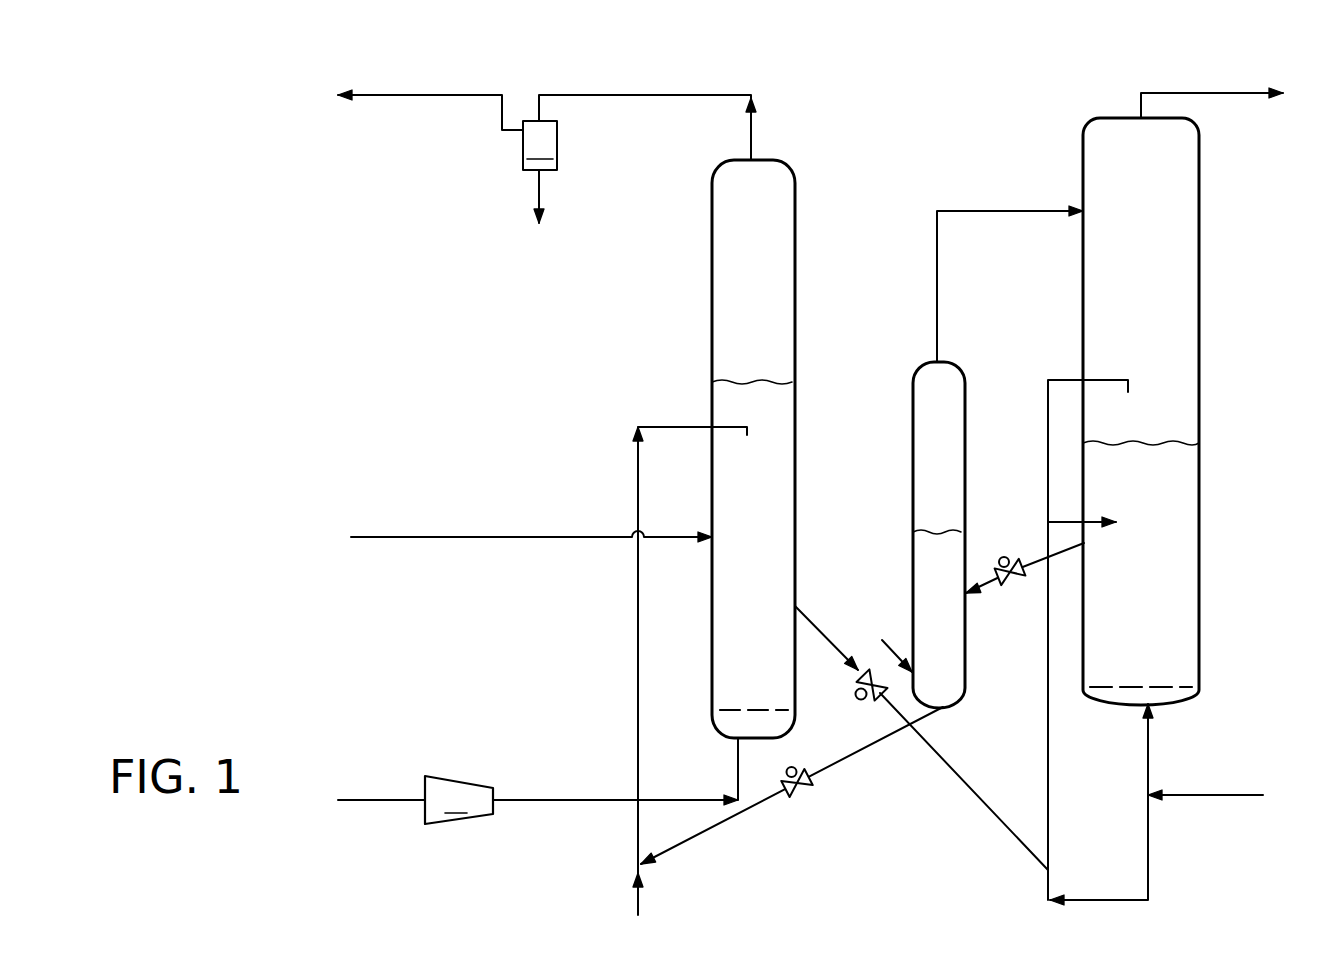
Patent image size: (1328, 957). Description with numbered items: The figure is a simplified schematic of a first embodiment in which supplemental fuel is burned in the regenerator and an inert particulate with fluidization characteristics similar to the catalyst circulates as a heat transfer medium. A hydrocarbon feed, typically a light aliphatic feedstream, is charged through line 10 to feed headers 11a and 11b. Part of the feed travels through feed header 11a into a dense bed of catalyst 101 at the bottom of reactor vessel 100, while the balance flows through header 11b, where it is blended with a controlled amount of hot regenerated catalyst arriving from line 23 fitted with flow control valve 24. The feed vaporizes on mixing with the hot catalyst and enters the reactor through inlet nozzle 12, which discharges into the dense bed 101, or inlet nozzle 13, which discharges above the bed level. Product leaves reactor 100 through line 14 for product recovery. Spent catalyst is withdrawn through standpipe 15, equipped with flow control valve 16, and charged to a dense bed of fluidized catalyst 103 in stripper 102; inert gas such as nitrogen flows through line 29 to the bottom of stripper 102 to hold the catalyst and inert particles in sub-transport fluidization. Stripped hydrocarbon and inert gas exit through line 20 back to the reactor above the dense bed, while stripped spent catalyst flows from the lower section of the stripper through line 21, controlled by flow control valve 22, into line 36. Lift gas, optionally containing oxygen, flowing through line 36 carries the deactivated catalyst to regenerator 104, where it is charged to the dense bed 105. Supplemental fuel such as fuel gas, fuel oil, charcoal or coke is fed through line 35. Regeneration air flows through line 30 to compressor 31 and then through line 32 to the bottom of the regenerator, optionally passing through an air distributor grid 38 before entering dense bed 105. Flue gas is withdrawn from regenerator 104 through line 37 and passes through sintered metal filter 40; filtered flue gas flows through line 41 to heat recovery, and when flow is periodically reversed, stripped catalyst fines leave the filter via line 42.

The line 10 is at (1232, 795).
The feed header 11a is at (1150, 771).
The feed header 11b is at (1150, 851).
The inlet nozzle 12 is at (1068, 520).
The inlet nozzle 13 is at (1068, 378).
The line 14 is at (1212, 92).
The standpipe 15 is at (1037, 562).
The flow control valve 16 is at (1002, 559).
The line 20 is at (937, 248).
The line 21 is at (862, 754).
The flow control valve 22 is at (810, 791).
The line 23 is at (980, 800).
The flow control valve 24 is at (855, 695).
The line 29 is at (906, 640).
The line 30 is at (384, 800).
The compressor 31 is at (459, 800).
The line 32 is at (580, 800).
The line 35 is at (478, 537).
The line 36 is at (645, 903).
The line 37 is at (752, 140).
The air distributor grid 38 is at (725, 710).
The sintered metal filter 40 is at (540, 145).
The line 41 is at (428, 103).
The line 42 is at (541, 190).
The reactor vessel 100 is at (1200, 357).
The dense bed of catalyst 101 is at (1114, 587).
The stripper 102 is at (912, 497).
The dense bed of fluidized catalyst 103 is at (926, 641).
The regenerator 104 is at (797, 412).
The dense bed 105 is at (733, 531).